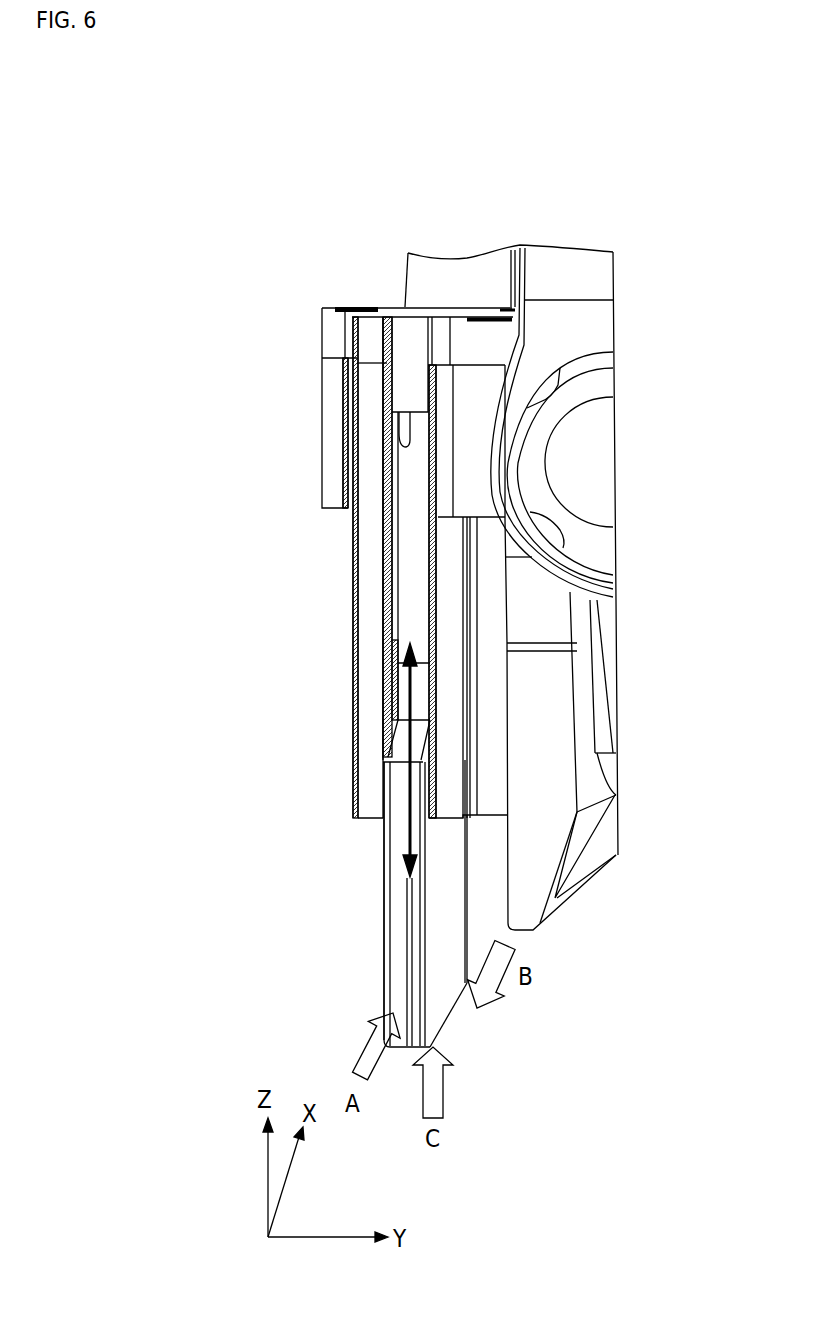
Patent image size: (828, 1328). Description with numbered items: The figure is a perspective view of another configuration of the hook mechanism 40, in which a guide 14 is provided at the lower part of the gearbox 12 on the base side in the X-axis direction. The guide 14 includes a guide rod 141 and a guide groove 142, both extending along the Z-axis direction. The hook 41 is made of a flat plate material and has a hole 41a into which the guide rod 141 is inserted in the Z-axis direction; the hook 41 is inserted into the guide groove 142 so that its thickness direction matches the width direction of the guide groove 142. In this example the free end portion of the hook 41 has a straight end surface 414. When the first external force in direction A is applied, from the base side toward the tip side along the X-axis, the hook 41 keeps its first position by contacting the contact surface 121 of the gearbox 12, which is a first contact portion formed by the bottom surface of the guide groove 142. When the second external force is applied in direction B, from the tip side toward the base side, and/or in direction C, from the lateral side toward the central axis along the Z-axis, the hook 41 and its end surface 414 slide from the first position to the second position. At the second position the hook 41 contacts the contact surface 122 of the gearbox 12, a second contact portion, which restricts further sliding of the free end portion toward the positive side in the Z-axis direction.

The gearbox 12 is at (408, 258).
The contact surface (second contact portion) 122 is at (400, 440).
The guide groove 142 is at (400, 560).
The guide rod 141 is at (397, 633).
The guide 14 is at (357, 702).
The contact surface (first contact portion) 121 is at (452, 690).
The hook 41 is at (383, 912).
The hole 41a is at (450, 854).
The hook mechanism 40 is at (303, 978).
The end surface 414 is at (452, 1013).